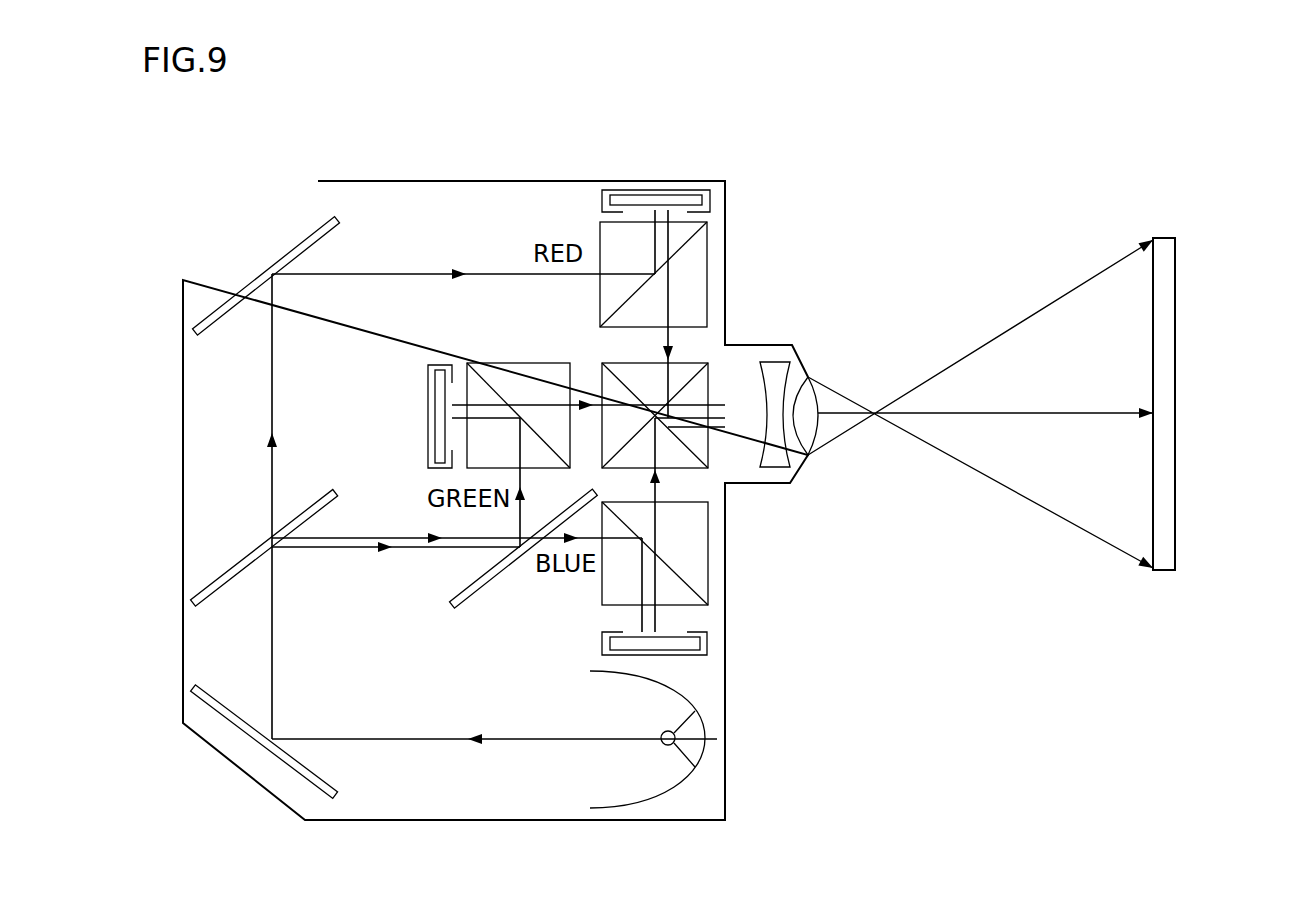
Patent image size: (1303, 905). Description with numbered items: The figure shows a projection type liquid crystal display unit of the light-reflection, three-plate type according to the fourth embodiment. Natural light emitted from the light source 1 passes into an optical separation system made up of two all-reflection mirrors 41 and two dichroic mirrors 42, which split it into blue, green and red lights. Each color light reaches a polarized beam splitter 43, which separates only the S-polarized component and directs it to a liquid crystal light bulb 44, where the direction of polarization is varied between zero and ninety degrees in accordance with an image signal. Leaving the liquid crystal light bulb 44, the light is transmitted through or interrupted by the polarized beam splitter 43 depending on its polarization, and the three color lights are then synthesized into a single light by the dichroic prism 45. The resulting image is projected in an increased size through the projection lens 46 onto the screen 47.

The light source 1 is at (680, 690).
The all-reflection mirror 41 is at (268, 270).
The dichroic mirror 42 is at (247, 567).
The polarized beam splitter 43 is at (688, 267).
The liquid crystal light bulb 44 is at (707, 640).
The dichroic prism 45 is at (710, 378).
The projection lens 46 is at (800, 463).
The screen 47 is at (1163, 475).